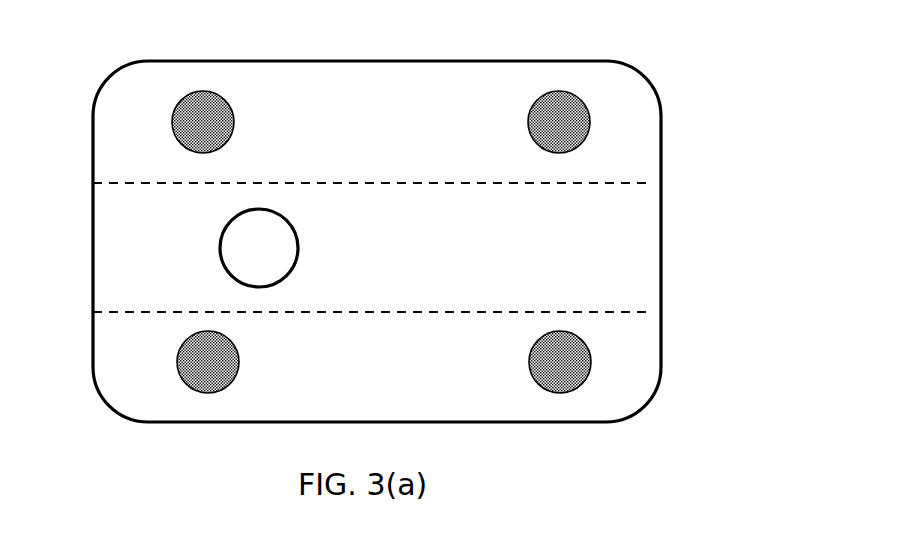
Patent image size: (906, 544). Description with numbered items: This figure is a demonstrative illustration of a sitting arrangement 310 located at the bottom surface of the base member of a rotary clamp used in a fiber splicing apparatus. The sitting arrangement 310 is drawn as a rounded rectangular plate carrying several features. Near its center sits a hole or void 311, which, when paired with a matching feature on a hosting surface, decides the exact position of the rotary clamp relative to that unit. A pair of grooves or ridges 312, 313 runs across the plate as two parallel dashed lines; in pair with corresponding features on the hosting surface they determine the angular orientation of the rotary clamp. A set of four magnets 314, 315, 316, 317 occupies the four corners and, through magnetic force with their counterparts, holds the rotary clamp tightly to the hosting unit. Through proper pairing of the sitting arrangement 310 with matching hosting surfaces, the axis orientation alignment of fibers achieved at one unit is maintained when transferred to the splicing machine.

The sitting arrangement 310 is at (458, 402).
The hole or void 311 is at (282, 241).
The groove 312 is at (598, 178).
The groove 313 is at (603, 307).
The magnet 314 is at (218, 112).
The magnet 315 is at (563, 110).
The magnet 316 is at (570, 354).
The magnet 317 is at (185, 362).